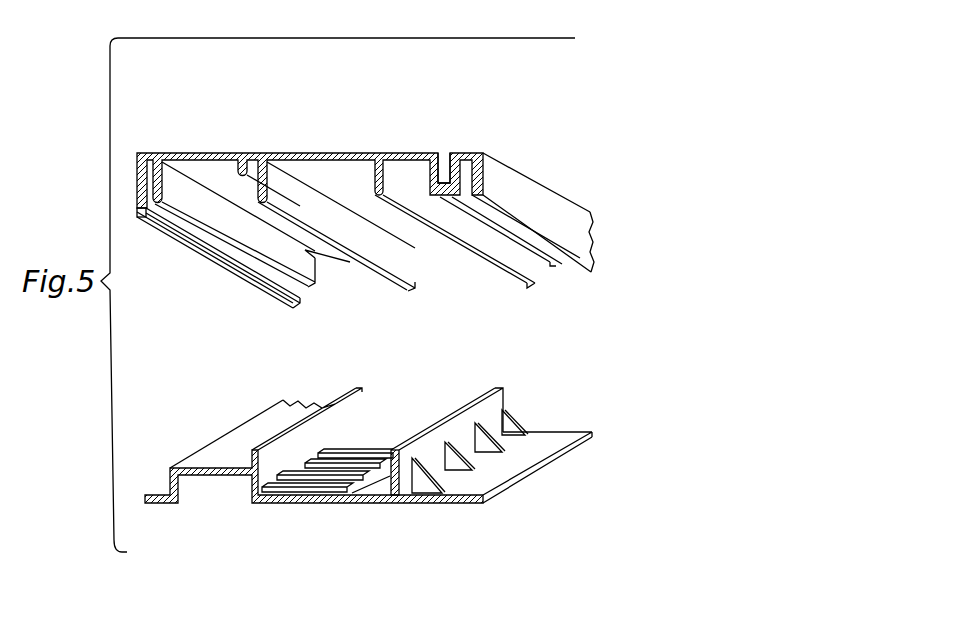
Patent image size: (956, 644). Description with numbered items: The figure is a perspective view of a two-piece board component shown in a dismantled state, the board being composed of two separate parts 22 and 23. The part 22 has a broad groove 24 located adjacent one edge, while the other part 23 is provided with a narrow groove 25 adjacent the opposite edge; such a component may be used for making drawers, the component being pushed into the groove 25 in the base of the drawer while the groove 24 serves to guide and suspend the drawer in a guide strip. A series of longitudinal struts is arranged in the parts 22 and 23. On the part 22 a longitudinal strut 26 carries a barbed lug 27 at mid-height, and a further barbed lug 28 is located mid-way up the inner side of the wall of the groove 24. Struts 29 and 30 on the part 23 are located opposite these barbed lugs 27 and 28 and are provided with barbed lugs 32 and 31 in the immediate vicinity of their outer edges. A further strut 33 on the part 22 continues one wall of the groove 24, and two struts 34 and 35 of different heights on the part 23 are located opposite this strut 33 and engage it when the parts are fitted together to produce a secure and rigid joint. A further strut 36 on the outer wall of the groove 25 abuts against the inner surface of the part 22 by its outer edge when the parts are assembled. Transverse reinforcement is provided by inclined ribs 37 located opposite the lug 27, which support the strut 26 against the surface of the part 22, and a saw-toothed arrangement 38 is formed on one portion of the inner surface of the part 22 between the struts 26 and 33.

The part 22 is at (472, 504).
The part 23 is at (482, 182).
The broad groove 24 is at (228, 480).
The narrow groove 25 is at (449, 153).
The longitudinal strut 26 is at (396, 450).
The barbed lug 27 is at (380, 470).
The barbed lug 28 is at (165, 478).
The strut 29 is at (378, 195).
The strut 30 is at (158, 152).
The barbed lug 31 is at (405, 195).
The barbed lug 32 is at (177, 193).
The strut 33 is at (256, 450).
The strut 34 is at (242, 153).
The strut 35 is at (263, 162).
The strut 36 is at (446, 200).
The inclined ribs 37 is at (450, 462).
The saw-toothed arrangement 38 is at (330, 478).